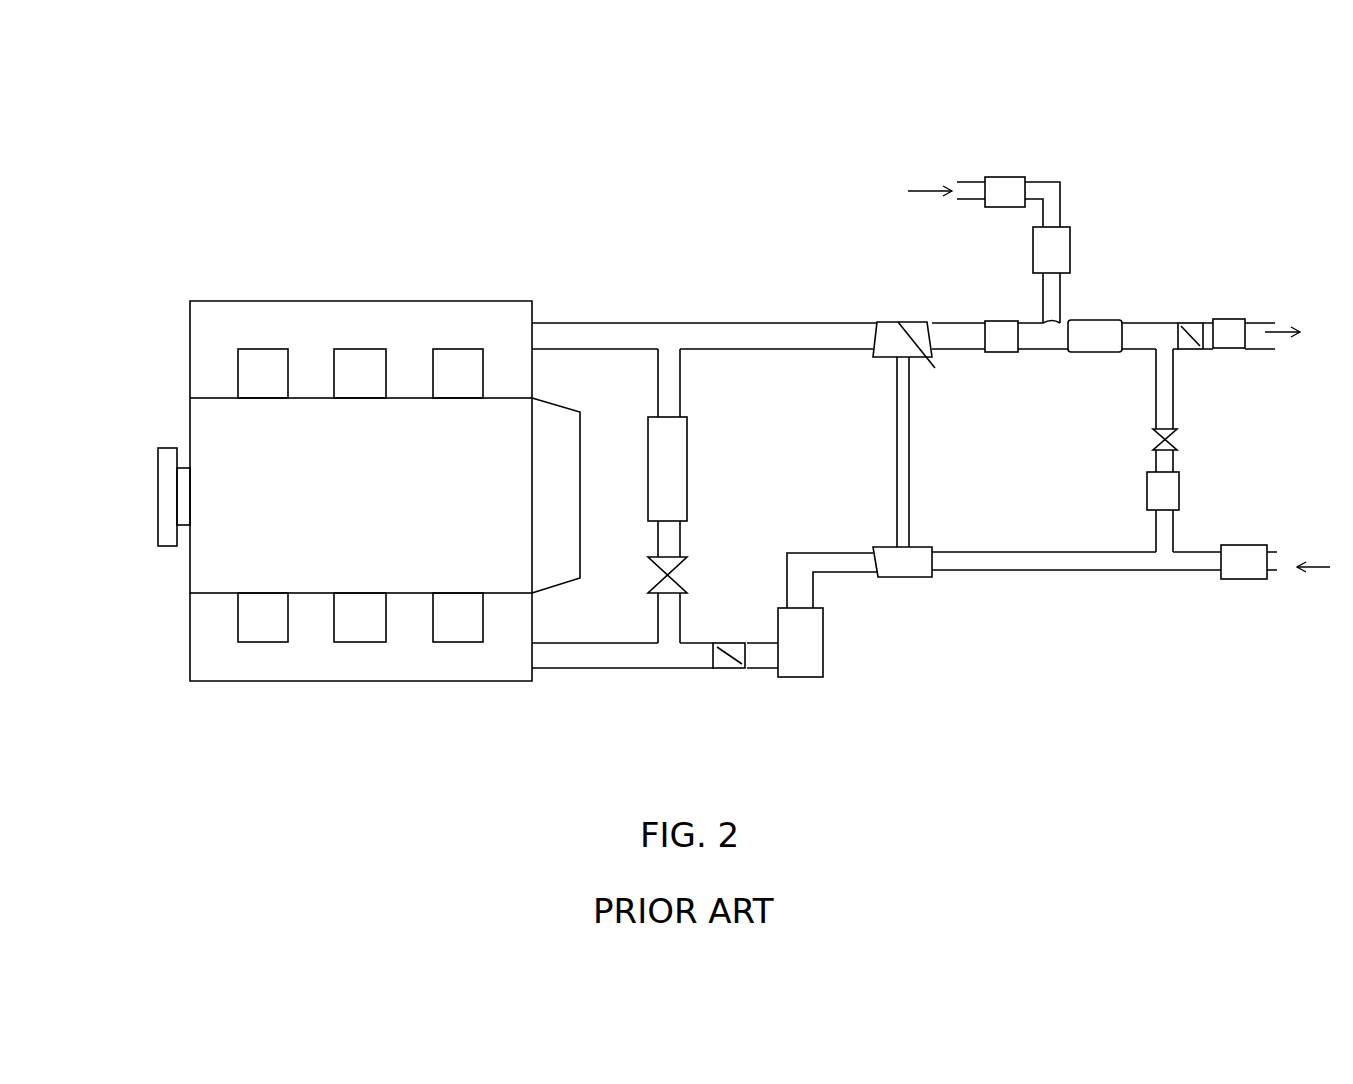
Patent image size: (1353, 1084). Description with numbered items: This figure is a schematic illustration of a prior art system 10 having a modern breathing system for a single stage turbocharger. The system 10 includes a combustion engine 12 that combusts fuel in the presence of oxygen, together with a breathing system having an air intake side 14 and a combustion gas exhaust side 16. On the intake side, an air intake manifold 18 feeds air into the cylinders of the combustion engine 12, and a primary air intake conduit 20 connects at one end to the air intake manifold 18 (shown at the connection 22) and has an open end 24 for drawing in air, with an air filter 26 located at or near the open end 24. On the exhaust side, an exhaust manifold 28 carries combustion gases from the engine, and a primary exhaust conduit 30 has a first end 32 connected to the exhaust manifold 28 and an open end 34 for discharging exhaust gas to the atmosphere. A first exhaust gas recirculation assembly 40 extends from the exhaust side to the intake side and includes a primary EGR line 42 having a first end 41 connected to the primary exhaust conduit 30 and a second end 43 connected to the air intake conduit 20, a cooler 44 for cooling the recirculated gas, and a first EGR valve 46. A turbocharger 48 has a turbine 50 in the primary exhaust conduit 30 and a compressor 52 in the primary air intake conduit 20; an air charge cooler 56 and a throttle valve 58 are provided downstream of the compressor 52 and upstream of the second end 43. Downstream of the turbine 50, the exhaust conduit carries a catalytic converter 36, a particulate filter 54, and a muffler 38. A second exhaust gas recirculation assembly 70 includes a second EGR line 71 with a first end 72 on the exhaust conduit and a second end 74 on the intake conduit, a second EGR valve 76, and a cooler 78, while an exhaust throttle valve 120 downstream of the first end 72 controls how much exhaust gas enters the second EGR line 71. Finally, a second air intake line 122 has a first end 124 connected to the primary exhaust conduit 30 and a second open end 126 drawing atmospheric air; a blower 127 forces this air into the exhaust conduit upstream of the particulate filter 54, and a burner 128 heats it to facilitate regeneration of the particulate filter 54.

The system 10 is at (135, 520).
The combustion engine 12 is at (243, 538).
The air intake side 14 is at (140, 653).
The combustion gas exhaust side 16 is at (163, 315).
The air intake manifold 18 is at (302, 652).
The primary air intake conduit 20 is at (633, 670).
The intake passage inlet to engine 22 is at (540, 638).
The open end 24 is at (1273, 558).
The air filter 26 is at (1243, 579).
The exhaust manifold 28 is at (333, 318).
The primary exhaust conduit 30 is at (695, 322).
The first end 32 is at (540, 319).
The open end 34 is at (1280, 322).
The catalytic converter 36 is at (1000, 321).
The muffler 38 is at (1225, 319).
The first exhaust gas recirculation assembly 40 is at (692, 496).
The first end 41 is at (683, 352).
The primary EGR line 42 is at (656, 397).
The second end 43 is at (685, 637).
The cooler 44 is at (687, 489).
The first EGR valve 46 is at (655, 576).
The turbocharger 48 is at (893, 428).
The turbine 50 is at (892, 322).
The compressor 52 is at (888, 548).
The particulate filter 54 is at (1092, 325).
The air charge cooler 56 is at (823, 635).
The throttle valve 58 is at (733, 668).
The second exhaust gas recirculation assembly 70 is at (1170, 450).
The second EGR line 71 is at (1173, 385).
The first end 72 is at (1175, 349).
The second end 74 is at (1180, 547).
The second EGR valve 76 is at (1172, 437).
The cooler 78 is at (1179, 490).
The exhaust throttle valve 120 is at (1185, 322).
The second air intake line 122 is at (1063, 200).
The first end 124 is at (1063, 323).
The second open end 126 is at (952, 183).
The blower 127 is at (1002, 177).
The burner 128 is at (1072, 245).